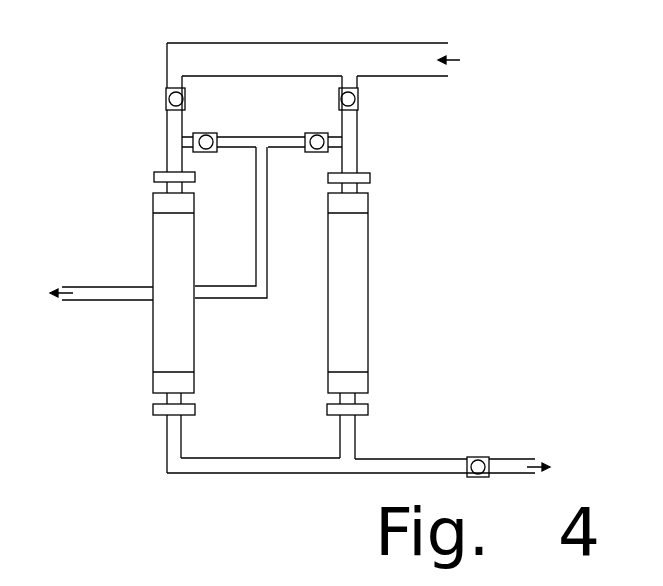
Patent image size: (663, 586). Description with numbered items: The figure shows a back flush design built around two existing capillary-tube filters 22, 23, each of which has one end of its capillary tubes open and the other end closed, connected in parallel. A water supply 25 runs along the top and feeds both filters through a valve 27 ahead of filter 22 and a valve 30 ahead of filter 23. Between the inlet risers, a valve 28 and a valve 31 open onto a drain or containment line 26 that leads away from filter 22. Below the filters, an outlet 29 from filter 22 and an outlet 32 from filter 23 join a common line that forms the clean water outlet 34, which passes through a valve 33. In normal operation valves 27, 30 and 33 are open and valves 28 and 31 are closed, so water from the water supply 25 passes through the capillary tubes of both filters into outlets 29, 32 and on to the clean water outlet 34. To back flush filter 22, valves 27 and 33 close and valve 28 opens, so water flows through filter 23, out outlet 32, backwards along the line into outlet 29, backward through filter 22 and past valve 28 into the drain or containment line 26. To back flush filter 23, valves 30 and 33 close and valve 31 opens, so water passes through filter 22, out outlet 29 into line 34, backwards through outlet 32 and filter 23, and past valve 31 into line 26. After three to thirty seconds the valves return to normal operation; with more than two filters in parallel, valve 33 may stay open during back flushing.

The filter 22 is at (172, 238).
The filter 23 is at (347, 238).
The water supply 25 is at (249, 60).
The drain or containment line 26 is at (105, 293).
The valve 27 is at (169, 99).
The valve 28 is at (207, 143).
The outlet 29 is at (173, 428).
The valve 30 is at (355, 99).
The valve 31 is at (315, 142).
The outlet 32 is at (347, 427).
The valve 33 is at (478, 460).
The clean water outlet 34 is at (288, 473).